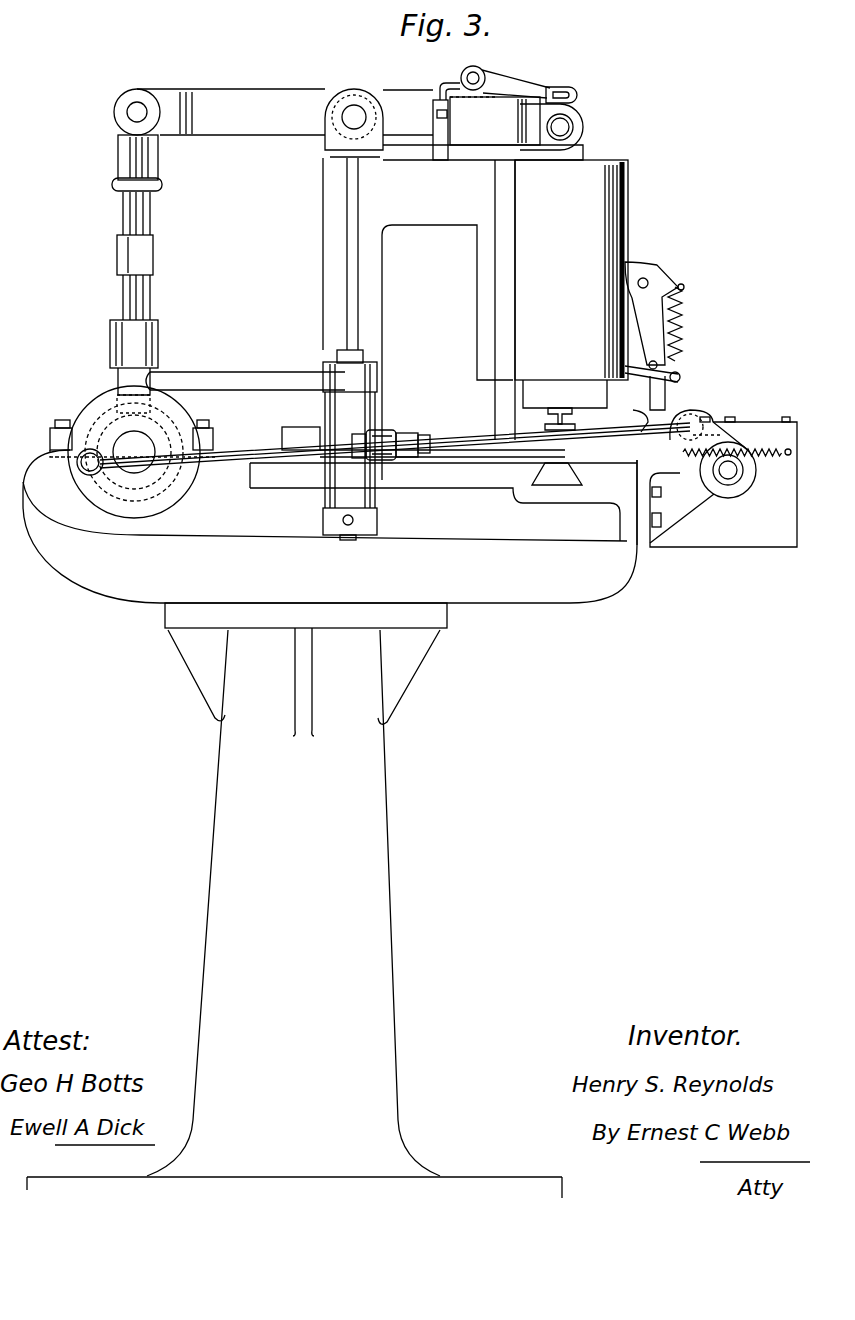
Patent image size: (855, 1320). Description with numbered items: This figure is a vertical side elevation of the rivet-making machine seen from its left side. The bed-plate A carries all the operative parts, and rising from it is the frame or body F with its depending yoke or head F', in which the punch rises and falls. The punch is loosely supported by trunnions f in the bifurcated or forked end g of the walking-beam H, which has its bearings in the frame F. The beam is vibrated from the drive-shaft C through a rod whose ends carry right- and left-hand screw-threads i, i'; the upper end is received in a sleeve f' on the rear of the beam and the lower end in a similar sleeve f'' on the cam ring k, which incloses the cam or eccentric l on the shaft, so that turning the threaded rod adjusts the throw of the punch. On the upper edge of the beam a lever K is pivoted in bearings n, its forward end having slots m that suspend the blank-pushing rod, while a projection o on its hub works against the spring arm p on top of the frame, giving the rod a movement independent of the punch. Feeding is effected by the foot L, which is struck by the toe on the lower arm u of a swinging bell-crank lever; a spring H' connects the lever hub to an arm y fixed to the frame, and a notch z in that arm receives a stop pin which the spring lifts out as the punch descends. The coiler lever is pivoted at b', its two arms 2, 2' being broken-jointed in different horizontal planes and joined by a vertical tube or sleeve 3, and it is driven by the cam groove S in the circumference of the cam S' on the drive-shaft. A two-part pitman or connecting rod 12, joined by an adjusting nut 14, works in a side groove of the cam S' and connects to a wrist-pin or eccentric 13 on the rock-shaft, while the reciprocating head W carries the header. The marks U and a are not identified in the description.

The bed-plate A is at (342, 812).
The walking-beam H is at (348, 124).
The frame or body of the machine F is at (419, 319).
The depending yoke or head F' is at (571, 284).
The bifurcated or forked end of the beam g is at (575, 108).
The trunnions f is at (577, 127).
The spring arm p is at (438, 82).
The projection o is at (473, 69).
The lever K is at (503, 82).
The slots m is at (576, 90).
The sleeve f' is at (141, 163).
The left-hand screw-thread i' is at (148, 212).
The bearings n is at (150, 233).
The right-hand screw-thread i is at (144, 297).
The sleeve f'' is at (145, 366).
The arm of lever R 2 is at (245, 369).
The vertical tube or sleeve 3 is at (350, 442).
The pivot of lever R b' is at (343, 550).
The cam S' is at (139, 455).
The dashed cam path U is at (134, 450).
The shaft C is at (134, 452).
The cam ring k is at (132, 432).
The pitman or connecting rod 12 is at (472, 426).
The adjusting nut 14 is at (392, 438).
The arm of lever R 2' is at (442, 469).
The stop a is at (575, 420).
The lower arm of bell-crank lever u is at (651, 313).
The spring H' is at (688, 322).
The notch z is at (647, 362).
The arm y is at (680, 375).
The cam or eccentric l is at (650, 400).
The foot L is at (634, 410).
The cam groove S is at (717, 478).
The reciprocating head or holder W is at (728, 470).
The wrist-pin or eccentric 13 is at (705, 480).